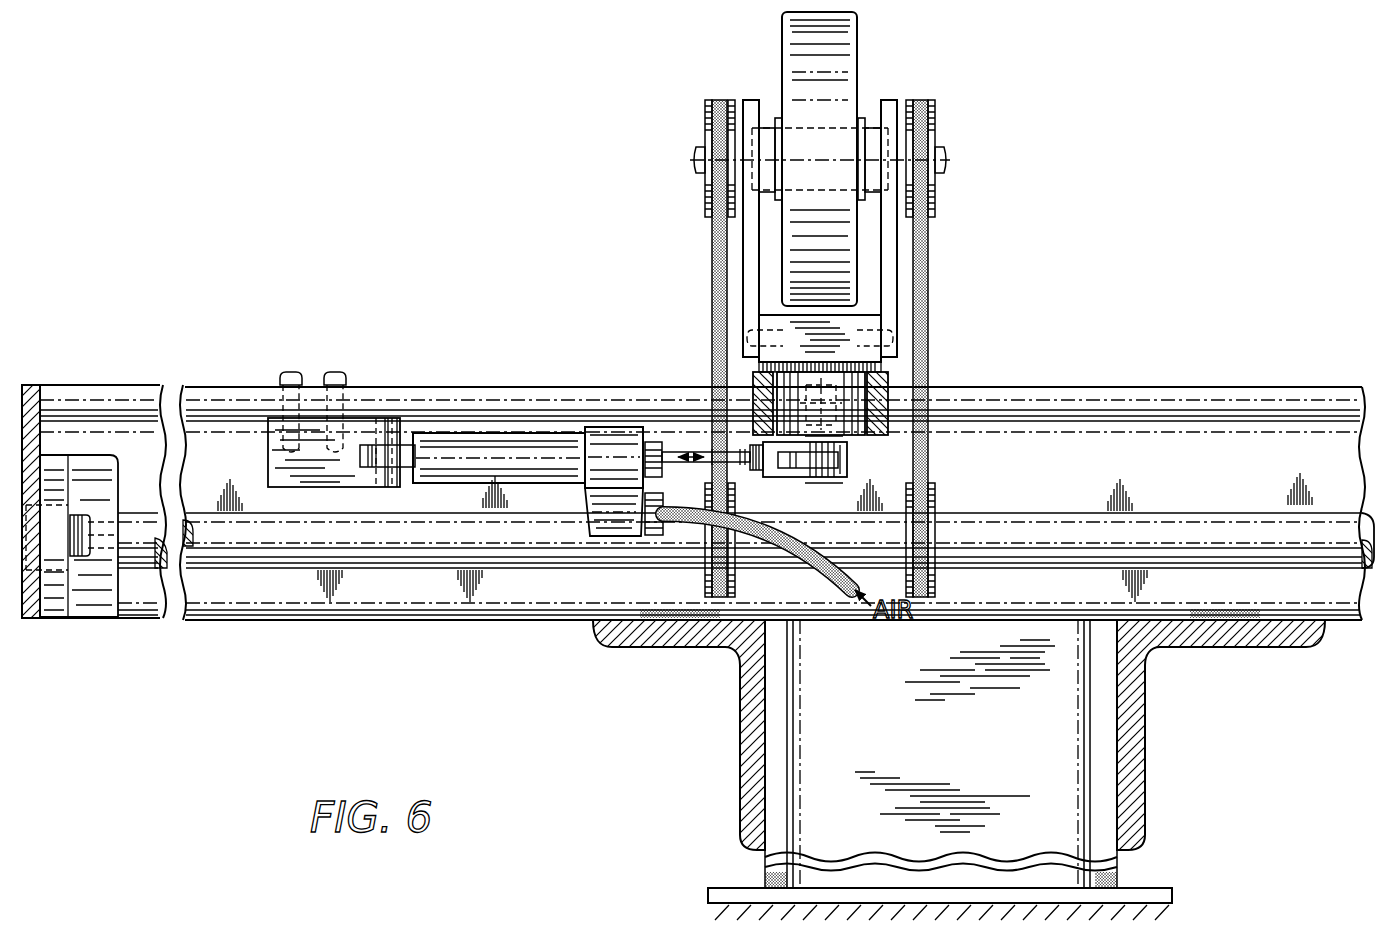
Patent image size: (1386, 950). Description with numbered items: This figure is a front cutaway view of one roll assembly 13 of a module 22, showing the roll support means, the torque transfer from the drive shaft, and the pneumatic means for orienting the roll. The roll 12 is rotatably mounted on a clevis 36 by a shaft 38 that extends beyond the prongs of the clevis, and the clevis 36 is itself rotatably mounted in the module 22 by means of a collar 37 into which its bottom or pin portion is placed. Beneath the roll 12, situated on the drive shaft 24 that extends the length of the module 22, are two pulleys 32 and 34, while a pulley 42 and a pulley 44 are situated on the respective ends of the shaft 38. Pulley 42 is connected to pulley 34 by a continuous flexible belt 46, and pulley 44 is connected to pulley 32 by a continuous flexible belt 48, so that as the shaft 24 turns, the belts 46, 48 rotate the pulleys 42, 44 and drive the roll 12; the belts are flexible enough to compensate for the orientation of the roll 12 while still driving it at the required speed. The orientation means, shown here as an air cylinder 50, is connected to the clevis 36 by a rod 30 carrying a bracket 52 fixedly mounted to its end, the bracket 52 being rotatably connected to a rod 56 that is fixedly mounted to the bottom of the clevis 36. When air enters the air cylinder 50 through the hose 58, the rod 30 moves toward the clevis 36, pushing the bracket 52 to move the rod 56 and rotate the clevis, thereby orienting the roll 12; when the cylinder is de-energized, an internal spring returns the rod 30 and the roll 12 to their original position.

The roll 12 is at (797, 31).
The roll assembly 13 is at (834, 309).
The module 22 is at (1152, 384).
The shaft 24 is at (520, 565).
The rod 30 is at (683, 440).
The pulley 32 is at (705, 582).
The pulley 34 is at (936, 585).
The clevis 36 is at (891, 279).
The collar 37 is at (885, 392).
The shaft 38 is at (947, 156).
The pulley 42 is at (936, 117).
The pulley 44 is at (711, 109).
The continuous flexible belt 46 is at (929, 241).
The continuous flexible belt 48 is at (716, 236).
The air cylinder 50 is at (484, 440).
The bracket 52 is at (786, 473).
The rod 56 is at (848, 460).
The hose 58 is at (818, 578).